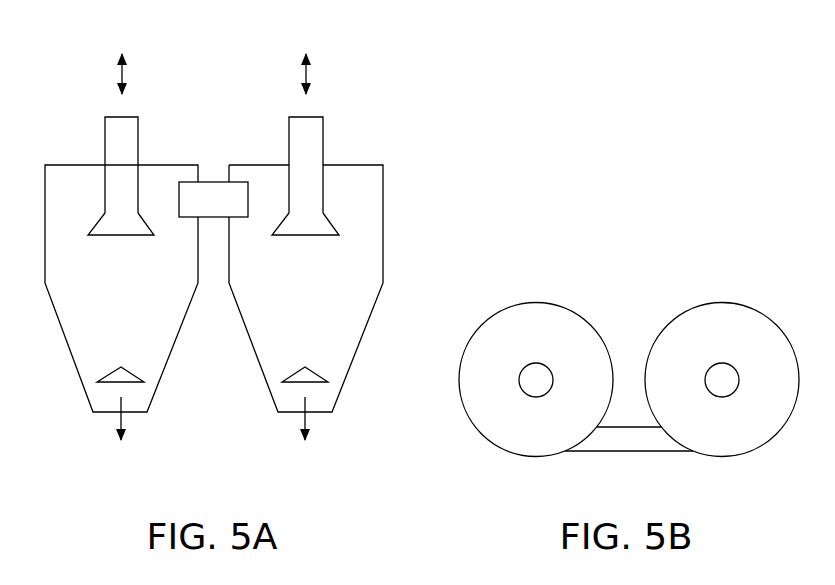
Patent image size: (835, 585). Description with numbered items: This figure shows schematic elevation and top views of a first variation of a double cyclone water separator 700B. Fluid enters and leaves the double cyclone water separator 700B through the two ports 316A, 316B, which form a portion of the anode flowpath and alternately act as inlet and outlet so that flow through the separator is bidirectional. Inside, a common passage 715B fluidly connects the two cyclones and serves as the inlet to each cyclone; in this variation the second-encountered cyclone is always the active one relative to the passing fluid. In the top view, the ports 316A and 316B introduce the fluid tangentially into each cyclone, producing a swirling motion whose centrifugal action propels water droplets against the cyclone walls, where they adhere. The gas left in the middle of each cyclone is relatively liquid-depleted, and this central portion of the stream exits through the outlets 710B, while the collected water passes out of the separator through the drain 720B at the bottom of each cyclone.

In FIG. 5A, the double cyclone water separator 700B is at (373, 88).
In FIG. 5B, the double cyclone water separator 700B is at (562, 265).
In FIG. 5A, the port 316A is at (105, 142).
In FIG. 5A, the port 316B is at (323, 142).
In FIG. 5A, the outlet 710B is at (120, 236).
In FIG. 5B, the outlet 710B is at (537, 365).
In FIG. 5A, the common passage 715B is at (213, 190).
In FIG. 5B, the common passage 715B is at (630, 447).
In FIG. 5A, the outlet 720B is at (137, 413).